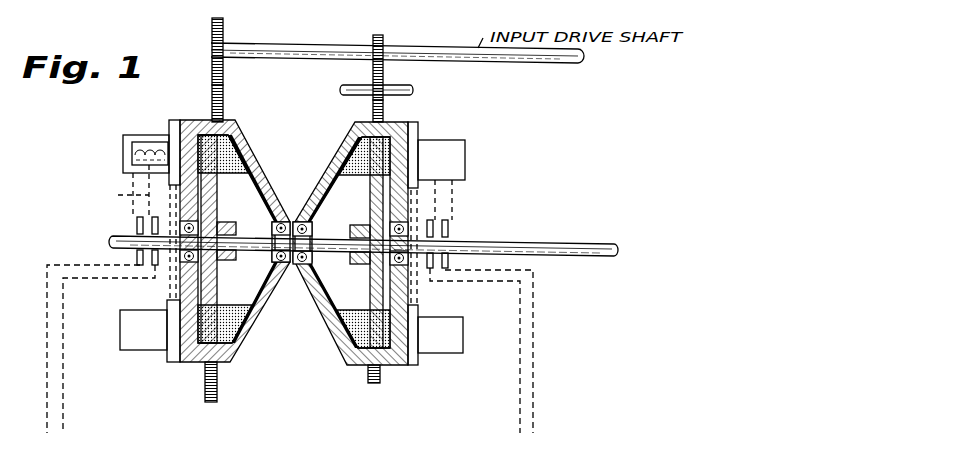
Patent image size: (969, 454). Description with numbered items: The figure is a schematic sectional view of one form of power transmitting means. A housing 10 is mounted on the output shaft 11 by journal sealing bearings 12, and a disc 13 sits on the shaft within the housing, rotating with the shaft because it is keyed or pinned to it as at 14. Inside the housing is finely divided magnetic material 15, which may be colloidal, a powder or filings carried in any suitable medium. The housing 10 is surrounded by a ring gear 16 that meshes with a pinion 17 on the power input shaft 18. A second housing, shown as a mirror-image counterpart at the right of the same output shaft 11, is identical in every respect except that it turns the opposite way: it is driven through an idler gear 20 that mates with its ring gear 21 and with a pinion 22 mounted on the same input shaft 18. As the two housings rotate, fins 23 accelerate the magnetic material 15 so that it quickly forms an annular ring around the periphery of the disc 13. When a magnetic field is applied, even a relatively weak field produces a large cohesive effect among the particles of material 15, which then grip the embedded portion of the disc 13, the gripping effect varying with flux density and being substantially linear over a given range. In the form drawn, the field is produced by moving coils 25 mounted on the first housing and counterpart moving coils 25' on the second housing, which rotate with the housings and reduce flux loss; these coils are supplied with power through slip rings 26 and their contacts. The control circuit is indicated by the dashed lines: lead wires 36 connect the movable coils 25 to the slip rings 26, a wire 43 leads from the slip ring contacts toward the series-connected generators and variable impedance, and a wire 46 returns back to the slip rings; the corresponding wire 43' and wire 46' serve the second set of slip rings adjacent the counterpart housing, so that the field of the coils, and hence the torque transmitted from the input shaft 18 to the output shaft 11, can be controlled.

The housing 10 is at (256, 156).
The output shaft 11 is at (110, 242).
The journal sealing bearings 12 is at (176, 270).
The disc 13 is at (218, 208).
The pin fastening 14 is at (239, 231).
The magnetic material 15 is at (226, 176).
The ring gear 16 is at (224, 104).
The pinion 17 is at (224, 67).
The power input shaft 18 is at (292, 44).
The idler gear 20 is at (386, 86).
The ring gear 21 is at (384, 116).
The pinion 22 is at (385, 46).
The fins 23 is at (200, 135).
The moving coils 25 is at (144, 230).
The moving coils 25' is at (472, 246).
The slip rings 26 is at (137, 229).
The lead wires 36 is at (272, 235).
The wire 43 is at (108, 349).
The wire 43' is at (511, 350).
The wire 46 is at (71, 349).
The wire 46' is at (489, 351).